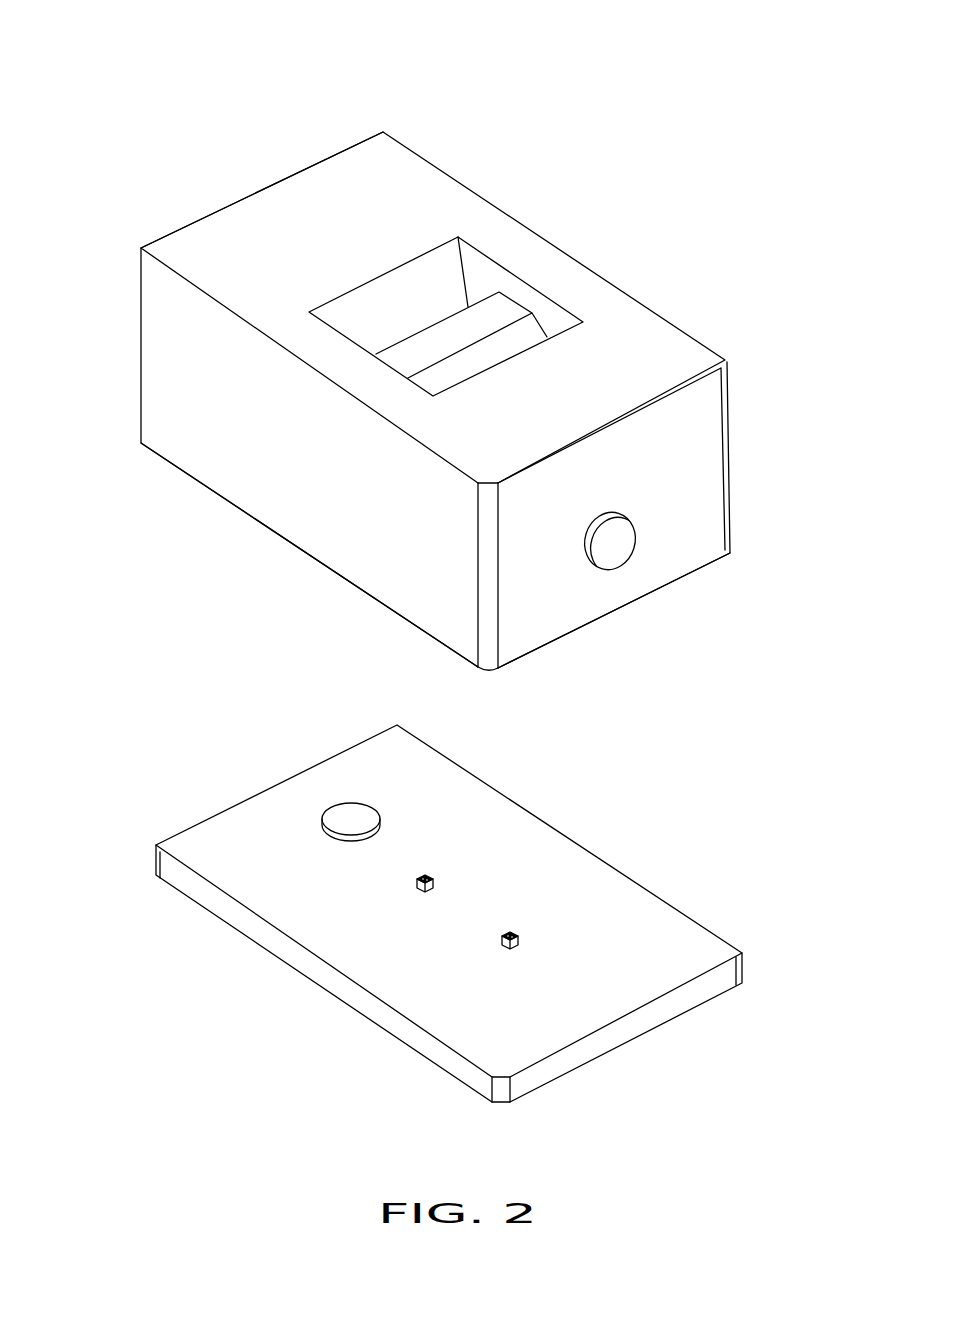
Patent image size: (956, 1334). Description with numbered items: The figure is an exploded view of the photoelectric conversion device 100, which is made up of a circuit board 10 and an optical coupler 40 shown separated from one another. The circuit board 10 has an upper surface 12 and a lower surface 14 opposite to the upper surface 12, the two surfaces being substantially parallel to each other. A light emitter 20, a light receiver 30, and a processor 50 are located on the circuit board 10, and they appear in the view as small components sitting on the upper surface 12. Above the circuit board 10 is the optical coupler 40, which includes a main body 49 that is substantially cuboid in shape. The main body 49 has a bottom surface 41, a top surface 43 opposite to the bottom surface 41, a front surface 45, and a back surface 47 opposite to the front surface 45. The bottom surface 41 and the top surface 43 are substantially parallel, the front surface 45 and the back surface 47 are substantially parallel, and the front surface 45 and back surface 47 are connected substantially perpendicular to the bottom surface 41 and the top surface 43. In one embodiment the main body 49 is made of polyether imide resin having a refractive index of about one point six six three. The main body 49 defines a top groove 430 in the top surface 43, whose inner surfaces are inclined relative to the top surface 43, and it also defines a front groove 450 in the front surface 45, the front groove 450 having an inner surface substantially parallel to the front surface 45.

The photoelectric conversion device 100 is at (483, 43).
The circuit board 10 is at (258, 820).
The upper surface 12 is at (658, 925).
The lower surface 14 is at (648, 1033).
The light emitter 20 is at (512, 932).
The light receiver 30 is at (427, 877).
The optical coupler 40 is at (164, 469).
The bottom surface 41 is at (697, 570).
The top surface 43 is at (640, 342).
The front surface 45 is at (707, 447).
The back surface 47 is at (250, 192).
The main body 49 is at (277, 500).
The top groove 430 is at (476, 273).
The front groove 450 is at (607, 547).
The processor 50 is at (347, 817).